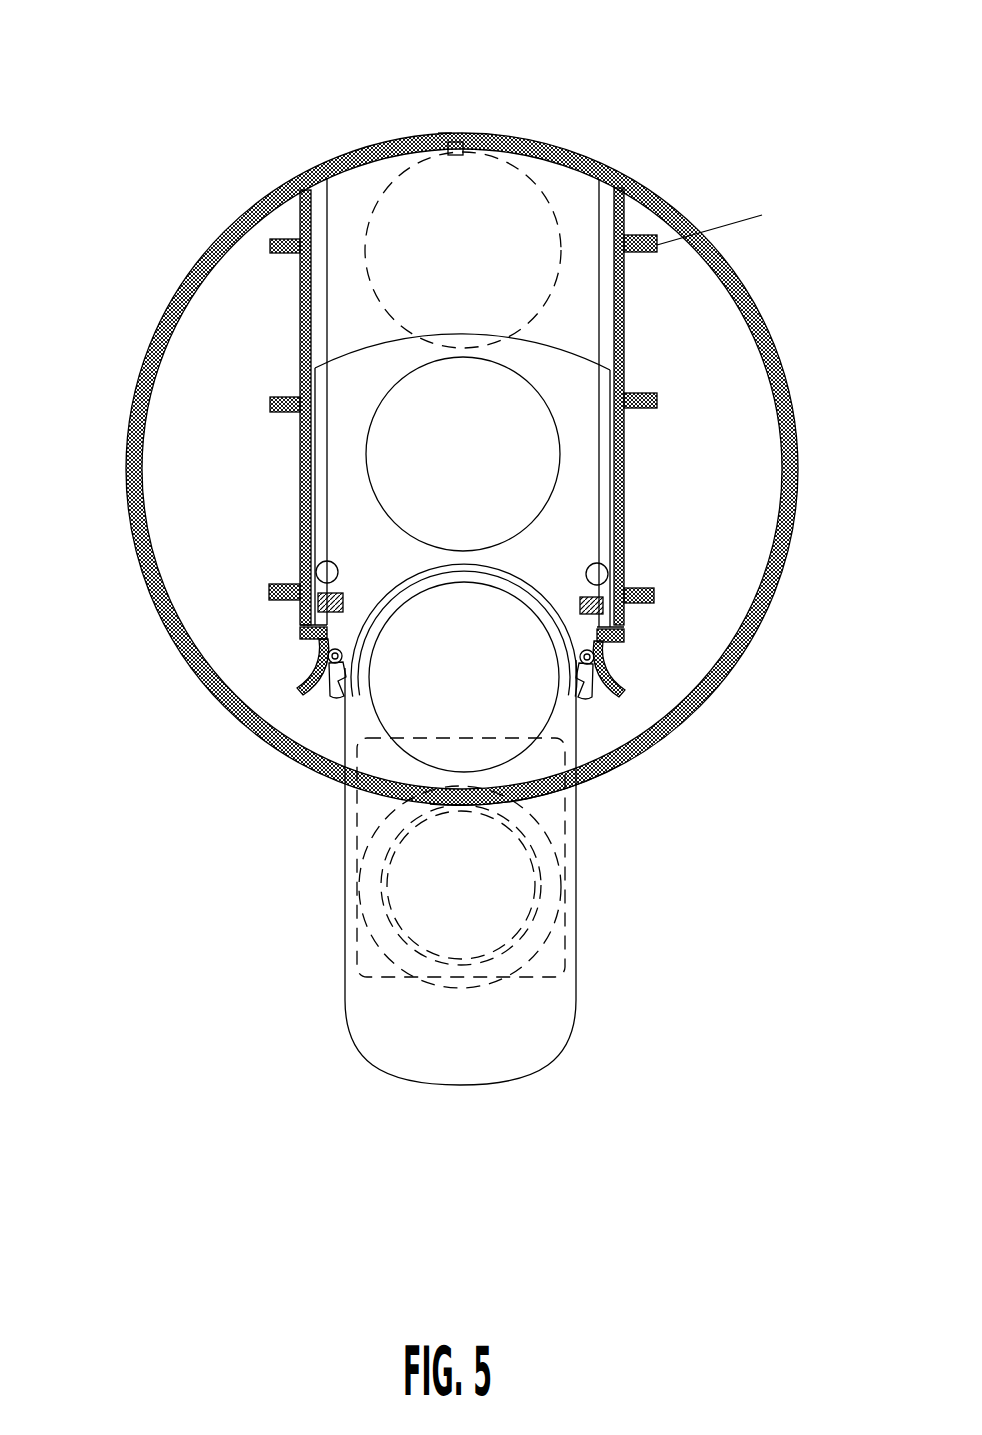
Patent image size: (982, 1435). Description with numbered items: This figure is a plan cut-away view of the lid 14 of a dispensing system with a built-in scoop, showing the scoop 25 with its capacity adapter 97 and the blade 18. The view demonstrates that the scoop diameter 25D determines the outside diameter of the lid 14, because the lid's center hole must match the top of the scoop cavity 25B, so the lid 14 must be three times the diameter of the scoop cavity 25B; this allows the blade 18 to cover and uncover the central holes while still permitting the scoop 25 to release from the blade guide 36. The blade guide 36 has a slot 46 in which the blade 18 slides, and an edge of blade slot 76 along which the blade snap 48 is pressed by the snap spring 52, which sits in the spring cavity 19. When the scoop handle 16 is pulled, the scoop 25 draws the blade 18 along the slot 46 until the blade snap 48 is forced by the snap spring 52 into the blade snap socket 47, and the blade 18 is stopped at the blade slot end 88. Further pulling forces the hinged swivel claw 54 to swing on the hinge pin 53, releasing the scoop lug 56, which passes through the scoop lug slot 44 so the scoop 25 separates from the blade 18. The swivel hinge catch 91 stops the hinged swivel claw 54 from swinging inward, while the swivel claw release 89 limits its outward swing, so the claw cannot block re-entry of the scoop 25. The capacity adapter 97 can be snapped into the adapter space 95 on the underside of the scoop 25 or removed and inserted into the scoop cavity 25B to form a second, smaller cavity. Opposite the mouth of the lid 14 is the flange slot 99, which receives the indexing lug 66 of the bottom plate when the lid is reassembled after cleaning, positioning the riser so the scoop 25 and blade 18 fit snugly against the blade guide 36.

The lid 14 is at (126, 443).
The scoop handle 16 is at (453, 1043).
The blade 18 is at (575, 483).
The spring cavity 19 is at (317, 577).
The scoop 25 is at (378, 958).
The scoop cavity 25B is at (452, 882).
The scoop diameter 25D is at (540, 183).
The blade guide 36 is at (662, 332).
The scoop lug slot 44 is at (583, 777).
The slot 46 is at (320, 212).
The blade snap socket 47 is at (623, 628).
The blade snap 48 is at (600, 575).
The snap spring 52 is at (580, 597).
The hinge pin 53 is at (337, 650).
The hinged swivel claw 54 is at (593, 683).
The scoop lug 56 is at (583, 680).
The indexing lug 66 is at (462, 140).
The edge of blade slot 76 is at (300, 275).
The blade slot end 88 is at (302, 632).
The swivel claw release 89 is at (620, 677).
The swivel hinge catch 91 is at (348, 662).
The adapter space 95 is at (552, 945).
The capacity adapter 97 is at (558, 897).
The flange slot 99 is at (438, 133).